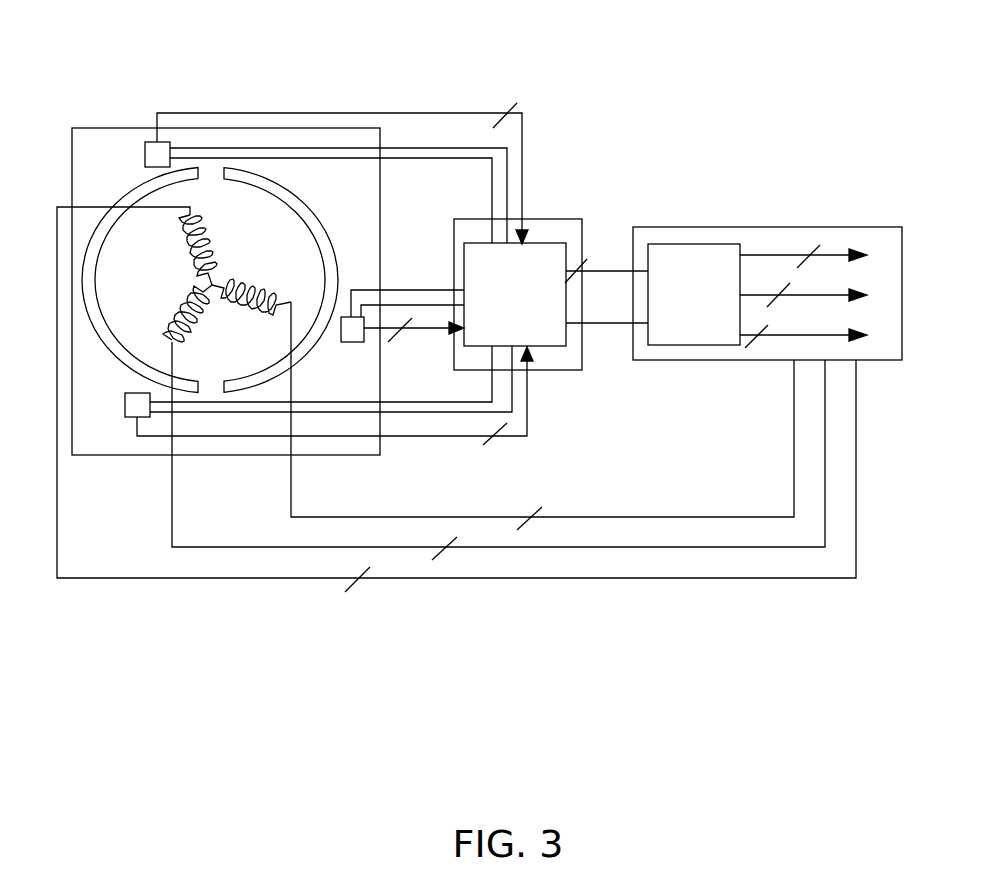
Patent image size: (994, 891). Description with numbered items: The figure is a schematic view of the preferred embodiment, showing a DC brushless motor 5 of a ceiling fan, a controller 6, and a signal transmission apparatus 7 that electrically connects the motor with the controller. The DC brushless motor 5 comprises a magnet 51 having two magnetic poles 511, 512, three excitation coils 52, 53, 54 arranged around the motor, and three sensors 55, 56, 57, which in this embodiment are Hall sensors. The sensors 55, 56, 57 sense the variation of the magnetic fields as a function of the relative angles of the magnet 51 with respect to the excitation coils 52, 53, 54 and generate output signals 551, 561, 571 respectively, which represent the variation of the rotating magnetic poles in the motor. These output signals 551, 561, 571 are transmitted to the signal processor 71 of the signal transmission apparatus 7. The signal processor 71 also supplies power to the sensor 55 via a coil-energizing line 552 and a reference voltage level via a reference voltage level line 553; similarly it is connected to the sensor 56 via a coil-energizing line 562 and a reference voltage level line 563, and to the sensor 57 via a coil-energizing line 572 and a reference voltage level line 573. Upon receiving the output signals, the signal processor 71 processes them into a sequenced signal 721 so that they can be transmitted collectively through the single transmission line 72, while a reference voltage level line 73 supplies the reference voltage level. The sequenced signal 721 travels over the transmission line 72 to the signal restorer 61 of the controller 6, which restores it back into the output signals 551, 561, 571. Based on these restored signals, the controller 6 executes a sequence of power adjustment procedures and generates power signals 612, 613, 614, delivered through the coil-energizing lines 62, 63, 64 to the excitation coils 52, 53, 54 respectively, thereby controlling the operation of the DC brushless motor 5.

The DC brushless motor 5 is at (307, 455).
The magnet 51 is at (65, 43).
The magnetic pole 511 is at (120, 198).
The magnetic pole 512 is at (240, 168).
The excitation coil 52 is at (270, 284).
The excitation coil 53 is at (168, 321).
The excitation coil 54 is at (216, 228).
The sensor 55 is at (145, 157).
The output signal 551 is at (510, 110).
The coil-energizing line 552 is at (412, 148).
The reference voltage level line 553 is at (427, 158).
The sensor 56 is at (338, 342).
The output signal 561 is at (405, 330).
The coil-energizing line 562 is at (390, 290).
The reference voltage level line 563 is at (435, 305).
The sensor 57 is at (130, 393).
The output signal 571 is at (488, 445).
The coil-energizing line 572 is at (442, 412).
The reference voltage level line 573 is at (412, 402).
The controller 6 is at (875, 227).
The signal restorer 61 is at (677, 244).
The power signal 612 is at (535, 518).
The power signal 613 is at (450, 548).
The power signal 614 is at (367, 580).
The coil-energizing line 62 is at (593, 517).
The coil-energizing line 63 is at (670, 547).
The coil-energizing line 64 is at (747, 578).
The signal transmission apparatus 7 is at (557, 370).
The signal processor 71 is at (540, 243).
The transmission line 72 is at (597, 271).
The sequenced signal 721 is at (578, 272).
The reference voltage level line 73 is at (612, 323).